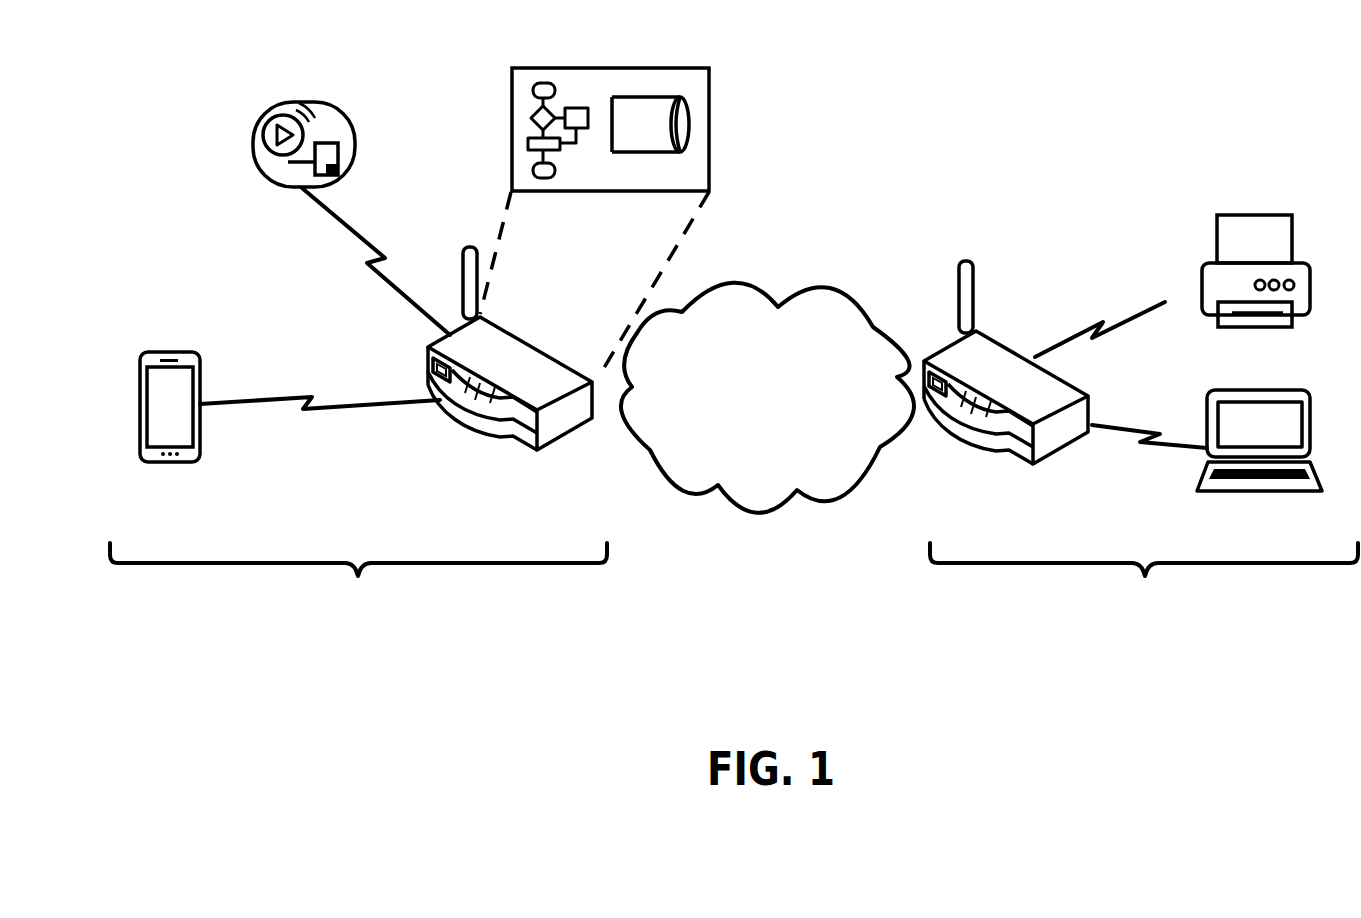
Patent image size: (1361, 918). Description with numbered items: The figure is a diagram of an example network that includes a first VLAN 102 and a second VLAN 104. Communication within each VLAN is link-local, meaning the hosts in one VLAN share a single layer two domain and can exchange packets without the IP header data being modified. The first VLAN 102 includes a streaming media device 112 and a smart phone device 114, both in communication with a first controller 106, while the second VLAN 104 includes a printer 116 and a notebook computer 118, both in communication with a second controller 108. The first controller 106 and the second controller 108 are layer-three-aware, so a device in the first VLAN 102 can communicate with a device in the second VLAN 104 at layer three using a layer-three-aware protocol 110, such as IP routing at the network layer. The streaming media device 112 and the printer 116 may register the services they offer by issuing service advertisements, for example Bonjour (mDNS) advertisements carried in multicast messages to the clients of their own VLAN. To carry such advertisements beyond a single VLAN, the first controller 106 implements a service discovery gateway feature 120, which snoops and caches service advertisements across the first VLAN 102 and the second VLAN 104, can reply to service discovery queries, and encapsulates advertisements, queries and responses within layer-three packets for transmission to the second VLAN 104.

The first VLAN 102 is at (358, 606).
The second VLAN 104 is at (1144, 606).
The first controller 106 is at (522, 338).
The second controller 108 is at (997, 340).
The Layer 3-aware protocol 110 is at (807, 288).
The streaming media device 112 is at (300, 98).
The smart phone device 114 is at (168, 352).
The printer 116 is at (1247, 217).
The notebook computer 118 is at (1310, 397).
The service discovery gateway feature 120 is at (550, 67).